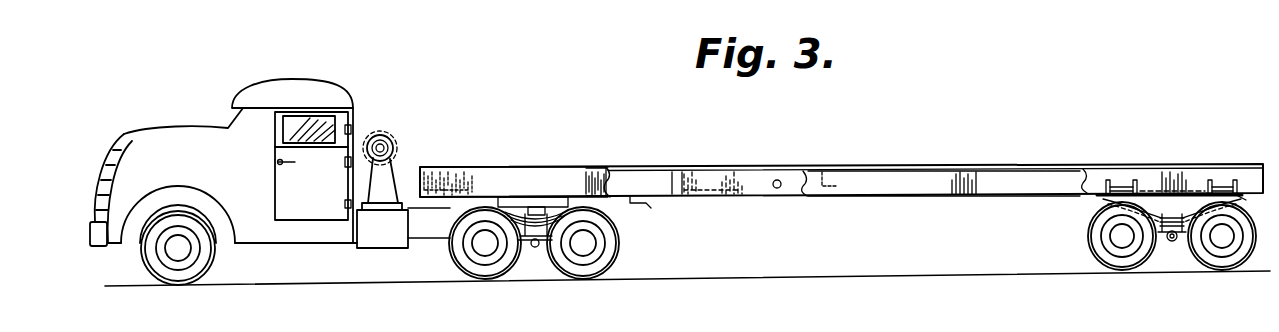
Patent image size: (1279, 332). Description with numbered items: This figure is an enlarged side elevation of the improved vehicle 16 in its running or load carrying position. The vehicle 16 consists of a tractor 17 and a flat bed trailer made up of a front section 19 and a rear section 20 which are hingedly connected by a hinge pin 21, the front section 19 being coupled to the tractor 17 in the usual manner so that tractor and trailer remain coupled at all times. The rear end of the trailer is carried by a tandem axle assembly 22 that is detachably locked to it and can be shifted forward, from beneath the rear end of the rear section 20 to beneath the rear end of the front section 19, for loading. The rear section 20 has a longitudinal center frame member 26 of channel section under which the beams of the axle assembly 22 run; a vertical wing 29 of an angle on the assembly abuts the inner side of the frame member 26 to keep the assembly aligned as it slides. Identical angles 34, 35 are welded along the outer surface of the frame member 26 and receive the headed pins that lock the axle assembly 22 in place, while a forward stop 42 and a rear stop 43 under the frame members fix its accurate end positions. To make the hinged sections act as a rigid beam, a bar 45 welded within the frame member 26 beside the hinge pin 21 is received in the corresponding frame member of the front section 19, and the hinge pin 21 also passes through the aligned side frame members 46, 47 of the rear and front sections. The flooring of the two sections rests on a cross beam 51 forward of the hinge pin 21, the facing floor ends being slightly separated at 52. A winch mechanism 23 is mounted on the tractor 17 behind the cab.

The vehicle 16 is at (771, 128).
The tractor 17 is at (148, 130).
The front section 19 is at (593, 168).
The rear section 20 is at (881, 168).
The hinge pin 21 is at (779, 179).
The tandem axle assembly 22 is at (1136, 268).
The winch 23 is at (378, 132).
The longitudinal center frame member 26 is at (793, 185).
The vertical wing 29 is at (1172, 217).
The angle 34 is at (1218, 178).
The angle 35 is at (1118, 178).
The forward stop 42 is at (642, 211).
The rear stop 43 is at (1243, 197).
The bar 45 is at (844, 183).
The side frame member 46 is at (889, 187).
The side frame member 47 is at (618, 183).
The cross beam 51 is at (680, 180).
The separation 52 is at (686, 168).